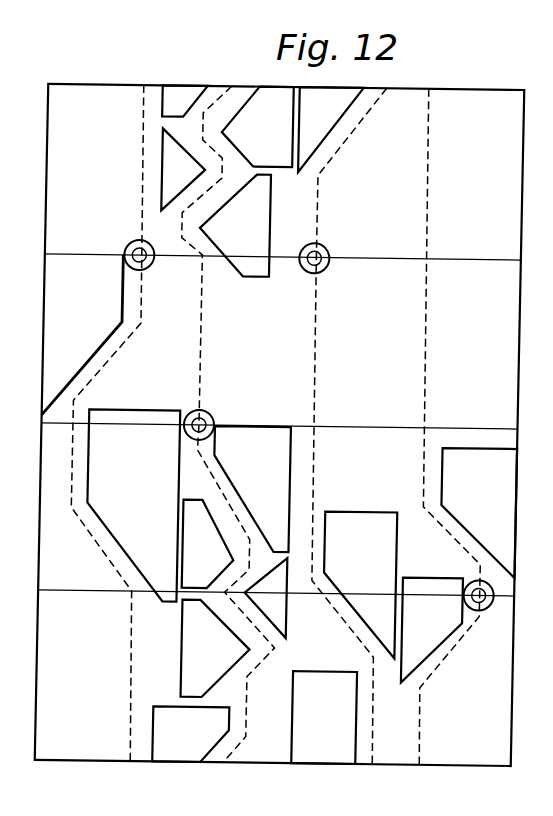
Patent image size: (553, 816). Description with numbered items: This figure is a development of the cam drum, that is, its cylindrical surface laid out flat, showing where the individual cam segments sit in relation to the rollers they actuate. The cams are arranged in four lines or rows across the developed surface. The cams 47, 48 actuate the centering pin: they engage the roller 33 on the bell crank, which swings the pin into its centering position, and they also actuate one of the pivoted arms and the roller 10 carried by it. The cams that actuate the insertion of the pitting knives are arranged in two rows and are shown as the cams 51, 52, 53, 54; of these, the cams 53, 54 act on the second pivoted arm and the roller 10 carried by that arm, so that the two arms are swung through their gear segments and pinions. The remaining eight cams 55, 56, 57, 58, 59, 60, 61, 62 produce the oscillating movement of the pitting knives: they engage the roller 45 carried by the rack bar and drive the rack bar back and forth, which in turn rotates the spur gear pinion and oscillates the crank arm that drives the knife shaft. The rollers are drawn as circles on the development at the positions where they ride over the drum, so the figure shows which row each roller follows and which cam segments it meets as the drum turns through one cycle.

The roller 10 is at (126, 250).
The roller 33 is at (486, 606).
The roller 45 is at (214, 422).
The cam 47 is at (432, 631).
The cam 48 is at (478, 513).
The cam 51 is at (327, 425).
The cam 52 is at (359, 585).
The cam 53 is at (132, 505).
The cam 54 is at (83, 335).
The cam 55 is at (195, 423).
The cam 56 is at (216, 649).
The cam 57 is at (266, 598).
The cam 58 is at (208, 544).
The cam 59 is at (251, 489).
The cam 60 is at (235, 225).
The cam 61 is at (183, 169).
The cam 62 is at (257, 126).